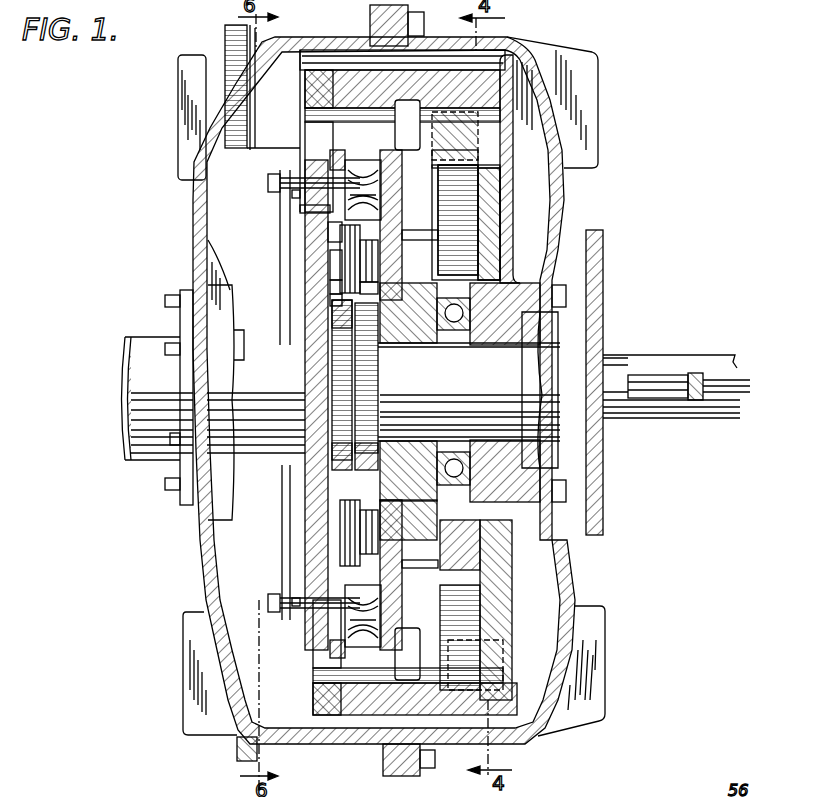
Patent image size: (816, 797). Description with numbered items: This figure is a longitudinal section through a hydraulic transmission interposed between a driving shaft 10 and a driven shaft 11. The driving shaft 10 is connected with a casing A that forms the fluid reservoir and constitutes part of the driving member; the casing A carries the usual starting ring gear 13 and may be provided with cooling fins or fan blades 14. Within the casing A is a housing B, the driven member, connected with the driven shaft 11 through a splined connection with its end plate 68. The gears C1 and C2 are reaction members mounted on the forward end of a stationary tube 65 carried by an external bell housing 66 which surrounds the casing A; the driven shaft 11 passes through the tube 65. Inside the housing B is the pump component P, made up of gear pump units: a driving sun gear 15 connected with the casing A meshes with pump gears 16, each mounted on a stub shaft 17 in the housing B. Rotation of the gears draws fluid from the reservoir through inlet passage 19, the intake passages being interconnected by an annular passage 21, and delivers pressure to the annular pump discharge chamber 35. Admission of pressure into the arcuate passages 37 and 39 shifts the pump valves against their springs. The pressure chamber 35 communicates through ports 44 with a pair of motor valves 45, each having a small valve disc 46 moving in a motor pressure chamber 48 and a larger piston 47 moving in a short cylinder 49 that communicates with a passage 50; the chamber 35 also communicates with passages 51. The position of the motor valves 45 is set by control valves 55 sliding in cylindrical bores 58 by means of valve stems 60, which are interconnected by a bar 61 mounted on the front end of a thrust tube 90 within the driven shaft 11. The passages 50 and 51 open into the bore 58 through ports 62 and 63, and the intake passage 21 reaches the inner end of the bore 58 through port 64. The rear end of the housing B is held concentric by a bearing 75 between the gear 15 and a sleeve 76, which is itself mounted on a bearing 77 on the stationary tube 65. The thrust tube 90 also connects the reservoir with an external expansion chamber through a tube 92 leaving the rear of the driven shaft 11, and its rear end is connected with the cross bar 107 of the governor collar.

The casing A is at (193, 230).
The housing B is at (352, 70).
The driving shaft 10 is at (125, 340).
The driven shaft 11 is at (665, 356).
The starting ring gear 13 is at (225, 42).
The cooling fins or fan blades 14 is at (178, 97).
The driving sun gear 15 is at (488, 272).
The pump gear 16 is at (480, 248).
The stub shaft 17 is at (495, 187).
The pump inlet passage 19 is at (318, 143).
The annular passage 21 is at (405, 102).
The annular pump discharge or pressure chamber 35 is at (413, 505).
The arcuate passage 37 is at (440, 140).
The arcuate passage 39 is at (428, 600).
The port 44 is at (360, 252).
The motor valve 45 is at (362, 264).
The valve disc 46 is at (365, 284).
The piston 47 is at (330, 266).
The motor pressure chamber 48 is at (345, 300).
The short cylinder 49 is at (340, 294).
The passage 50 is at (330, 228).
The passage 51 is at (418, 228).
The control valve 55 is at (378, 175).
The cylindrical bore 58 is at (340, 160).
The valve stem 60 is at (276, 176).
The bar 61 is at (246, 348).
The port 62 is at (330, 192).
The port 63 is at (345, 208).
The port 64 is at (398, 152).
The stationary tube 65 is at (440, 388).
The external bell housing 66 is at (600, 292).
The end plate 68 is at (320, 72).
The bearing 75 is at (468, 347).
The sleeve 76 is at (490, 345).
The bearing 77 is at (448, 332).
The thrust tube 90 is at (642, 375).
The tube 92 is at (742, 380).
The diametral cross bar 107 is at (697, 402).
The reaction gear C1 is at (380, 362).
The reaction gear C2 is at (318, 372).
The pump component P is at (485, 232).